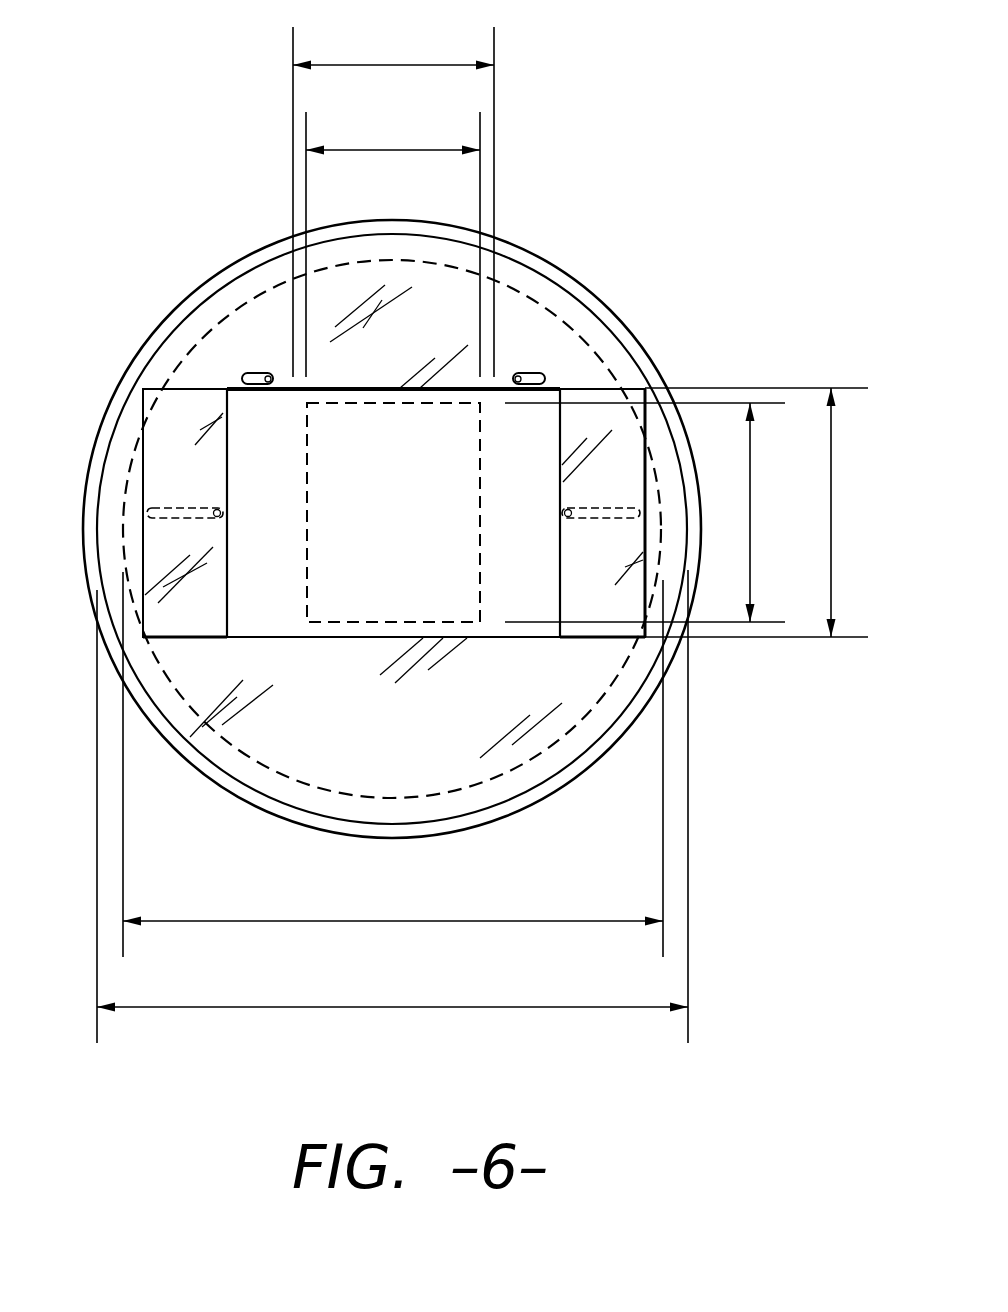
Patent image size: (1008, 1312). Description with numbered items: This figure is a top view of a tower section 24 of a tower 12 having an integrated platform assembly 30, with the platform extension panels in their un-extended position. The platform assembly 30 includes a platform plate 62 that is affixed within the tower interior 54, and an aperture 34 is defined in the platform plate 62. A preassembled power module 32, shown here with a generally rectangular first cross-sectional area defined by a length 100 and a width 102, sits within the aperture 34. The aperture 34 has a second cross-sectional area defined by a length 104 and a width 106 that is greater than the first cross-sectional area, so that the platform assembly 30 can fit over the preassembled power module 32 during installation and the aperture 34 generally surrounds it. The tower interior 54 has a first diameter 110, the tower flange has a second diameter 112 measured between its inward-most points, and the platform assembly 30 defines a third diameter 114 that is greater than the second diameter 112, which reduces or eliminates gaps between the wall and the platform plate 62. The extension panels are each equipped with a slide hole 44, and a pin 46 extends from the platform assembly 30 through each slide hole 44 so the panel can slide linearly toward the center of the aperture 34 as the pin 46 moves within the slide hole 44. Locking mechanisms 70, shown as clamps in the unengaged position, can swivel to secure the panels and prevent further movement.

The tower 12 is at (633, 132).
The tower section 24 is at (120, 372).
The platform assembly 30 is at (546, 338).
The preassembled power module 32 is at (478, 567).
The aperture 34 is at (260, 604).
The slide hole 44 is at (173, 506).
The pin 46 is at (217, 508).
The tower interior 54 is at (409, 742).
The platform plate 62 is at (275, 318).
The locking mechanism 70 is at (250, 378).
The length 100 is at (750, 548).
The width 102 is at (373, 149).
The length 104 is at (832, 561).
The width 106 is at (368, 63).
The first diameter 110 is at (392, 820).
The second diameter 112 is at (428, 940).
The third diameter 114 is at (528, 1014).